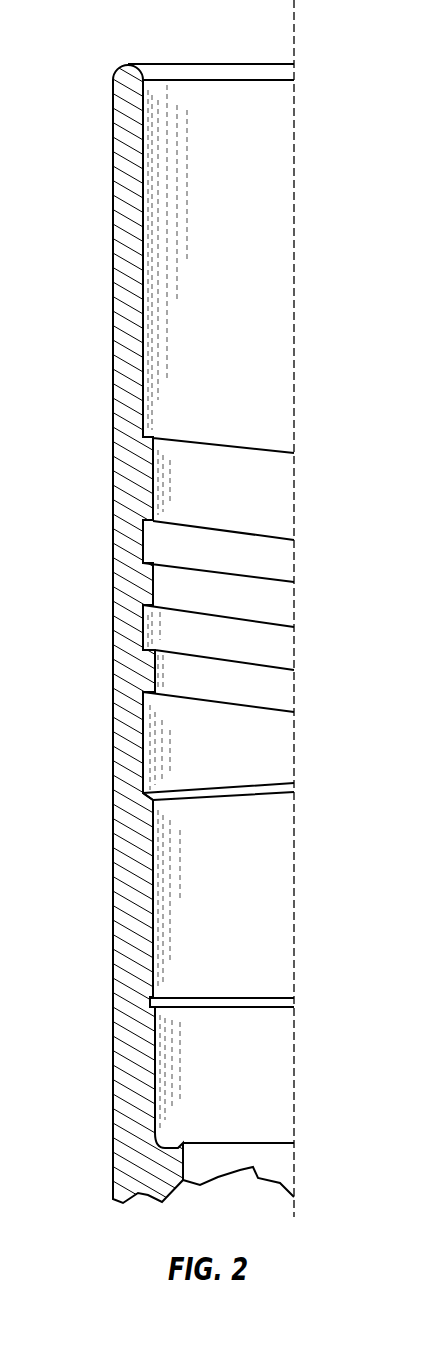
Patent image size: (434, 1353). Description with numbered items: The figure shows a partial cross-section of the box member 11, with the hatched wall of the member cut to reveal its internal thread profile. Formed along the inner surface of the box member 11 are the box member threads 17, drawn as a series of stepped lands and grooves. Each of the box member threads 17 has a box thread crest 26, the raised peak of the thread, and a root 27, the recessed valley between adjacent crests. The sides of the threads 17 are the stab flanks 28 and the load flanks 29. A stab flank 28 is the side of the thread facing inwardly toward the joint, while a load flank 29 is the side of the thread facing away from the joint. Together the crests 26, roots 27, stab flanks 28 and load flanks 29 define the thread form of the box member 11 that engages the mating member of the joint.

The box member 11 is at (117, 963).
The box thread crests 26 is at (150, 493).
The stab flanks 28 is at (143, 533).
The roots 27 is at (143, 545).
The box member threads 17 is at (153, 577).
The load flanks 29 is at (145, 695).